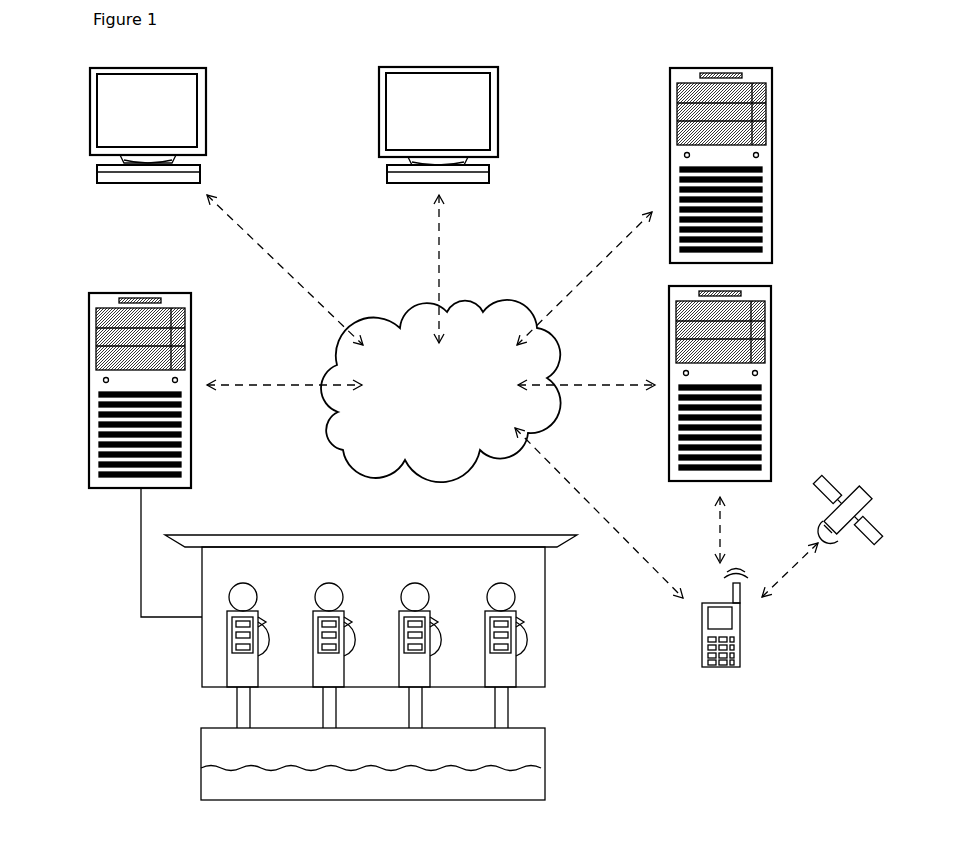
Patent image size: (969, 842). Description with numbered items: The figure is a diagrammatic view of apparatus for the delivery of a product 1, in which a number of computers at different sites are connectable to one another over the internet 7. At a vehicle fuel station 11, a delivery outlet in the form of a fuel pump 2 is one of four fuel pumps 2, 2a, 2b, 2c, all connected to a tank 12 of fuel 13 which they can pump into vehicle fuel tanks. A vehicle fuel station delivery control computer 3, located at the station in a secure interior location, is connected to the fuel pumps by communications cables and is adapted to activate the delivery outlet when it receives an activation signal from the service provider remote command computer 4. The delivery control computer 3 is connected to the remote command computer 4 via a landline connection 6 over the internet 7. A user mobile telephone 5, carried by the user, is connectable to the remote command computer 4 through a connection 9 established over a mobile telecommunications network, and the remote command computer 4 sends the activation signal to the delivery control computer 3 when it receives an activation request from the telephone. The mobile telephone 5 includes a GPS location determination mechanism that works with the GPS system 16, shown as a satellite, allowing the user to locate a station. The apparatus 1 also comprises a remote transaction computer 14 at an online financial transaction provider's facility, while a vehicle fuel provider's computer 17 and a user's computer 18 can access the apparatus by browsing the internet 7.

The apparatus for the delivery of a product 1 is at (56, 120).
The fuel pump 2 is at (227, 652).
The fuel pump 2a is at (345, 667).
The fuel pump 2b is at (431, 667).
The fuel pump 2c is at (517, 667).
The vehicle fuel station delivery control computer 3 is at (89, 372).
The service provider remote command computer 4 is at (771, 368).
The user mobile telephone 5 is at (741, 628).
The landline connection 6 is at (292, 385).
The internet 7 is at (404, 306).
The connection 9 is at (718, 530).
The vehicle fuel station 11 is at (202, 580).
The tank 12 is at (201, 742).
The fuel 13 is at (222, 788).
The remote transaction computer 14 is at (772, 152).
The GPS system 16 is at (860, 497).
The vehicle fuel provider's computer 17 is at (205, 118).
The user's computer 18 is at (497, 118).